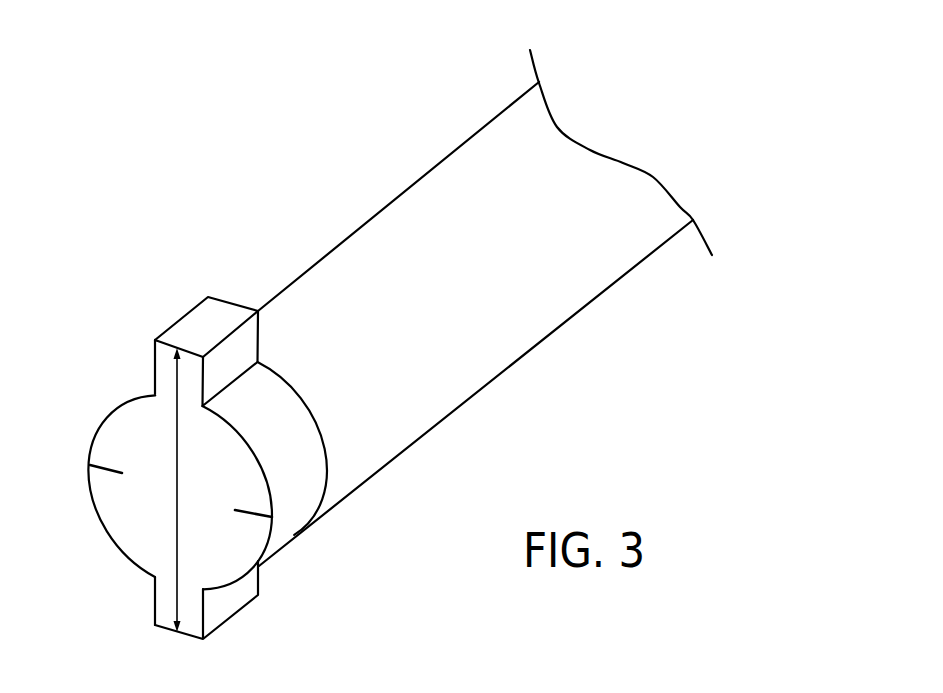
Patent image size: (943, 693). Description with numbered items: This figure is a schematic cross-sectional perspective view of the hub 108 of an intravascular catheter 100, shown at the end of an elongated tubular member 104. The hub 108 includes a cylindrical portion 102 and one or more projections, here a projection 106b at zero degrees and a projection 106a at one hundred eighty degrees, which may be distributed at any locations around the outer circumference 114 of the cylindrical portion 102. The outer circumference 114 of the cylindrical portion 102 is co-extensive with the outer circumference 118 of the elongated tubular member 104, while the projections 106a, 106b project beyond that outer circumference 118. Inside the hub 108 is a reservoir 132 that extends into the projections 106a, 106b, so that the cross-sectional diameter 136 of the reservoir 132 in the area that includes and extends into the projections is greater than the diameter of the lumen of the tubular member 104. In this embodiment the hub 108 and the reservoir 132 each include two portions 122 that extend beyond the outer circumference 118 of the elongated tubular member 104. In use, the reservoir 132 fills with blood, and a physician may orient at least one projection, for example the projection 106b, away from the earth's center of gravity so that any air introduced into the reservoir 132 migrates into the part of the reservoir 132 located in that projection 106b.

The intravascular catheter 100 is at (299, 187).
The cylindrical portion 102 is at (125, 552).
The elongated tubular member 104 is at (472, 163).
The projection 106a is at (243, 608).
The projection 106b is at (192, 310).
The hub 108 is at (97, 430).
The outer circumference 114 is at (292, 492).
The outer circumference 118 is at (518, 310).
The portions 122 is at (225, 312).
The reservoir 132 is at (157, 448).
The cross-sectional diameter 136 is at (178, 490).